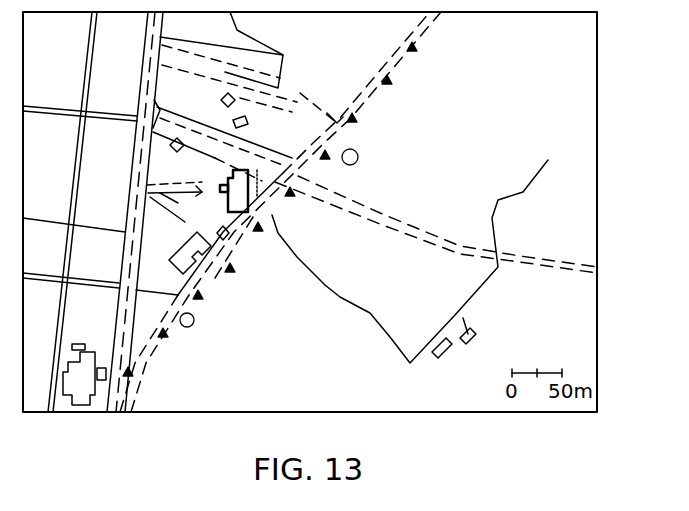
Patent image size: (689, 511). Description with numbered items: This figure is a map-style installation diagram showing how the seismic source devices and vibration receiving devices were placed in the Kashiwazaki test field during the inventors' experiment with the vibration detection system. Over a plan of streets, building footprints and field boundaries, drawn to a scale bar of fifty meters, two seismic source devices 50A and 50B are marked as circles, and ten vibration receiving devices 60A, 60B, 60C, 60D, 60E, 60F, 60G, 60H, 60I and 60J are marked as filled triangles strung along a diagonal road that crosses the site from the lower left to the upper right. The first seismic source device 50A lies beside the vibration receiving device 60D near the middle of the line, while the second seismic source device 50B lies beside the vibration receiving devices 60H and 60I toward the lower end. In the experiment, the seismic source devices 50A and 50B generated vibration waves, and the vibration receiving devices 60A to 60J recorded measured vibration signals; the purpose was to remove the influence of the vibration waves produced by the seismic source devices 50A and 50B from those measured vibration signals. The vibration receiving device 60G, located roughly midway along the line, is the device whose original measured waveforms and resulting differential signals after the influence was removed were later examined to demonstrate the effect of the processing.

The vibration receiving device 60A is at (418, 48).
The vibration receiving device 60B is at (392, 82).
The vibration receiving device 60C is at (350, 114).
The vibration receiving device 60D is at (328, 160).
The vibration receiving device 60E is at (293, 196).
The vibration receiving device 60F is at (263, 223).
The vibration receiving device 60G is at (234, 270).
The vibration receiving device 60H is at (202, 300).
The vibration receiving device 60I is at (167, 340).
The vibration receiving device 60J is at (132, 377).
The seismic source device 50A is at (358, 157).
The seismic source device 50B is at (194, 326).